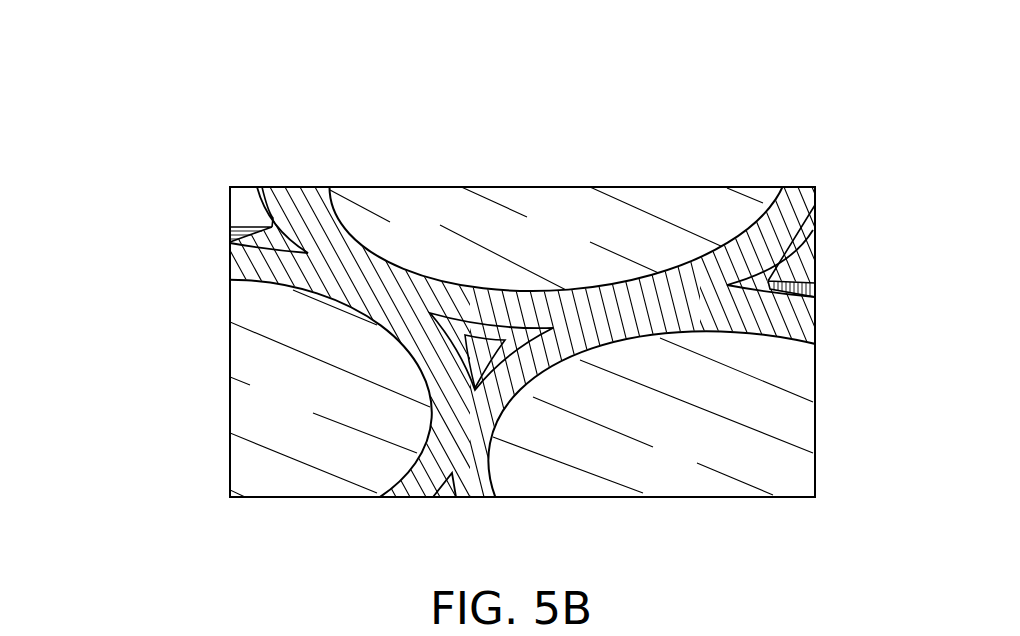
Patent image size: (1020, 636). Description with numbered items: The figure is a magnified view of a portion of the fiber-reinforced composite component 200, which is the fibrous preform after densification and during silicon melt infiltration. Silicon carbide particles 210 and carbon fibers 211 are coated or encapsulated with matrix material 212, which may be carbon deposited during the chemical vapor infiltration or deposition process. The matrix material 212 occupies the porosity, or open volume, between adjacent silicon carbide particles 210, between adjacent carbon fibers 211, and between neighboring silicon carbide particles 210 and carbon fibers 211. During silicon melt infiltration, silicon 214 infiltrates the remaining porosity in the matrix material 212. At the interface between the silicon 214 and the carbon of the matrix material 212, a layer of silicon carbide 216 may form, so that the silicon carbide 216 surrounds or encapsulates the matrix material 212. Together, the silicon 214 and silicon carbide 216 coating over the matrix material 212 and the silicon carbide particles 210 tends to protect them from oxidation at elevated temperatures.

The fiber-reinforced composite component 200 is at (143, 92).
The silicon carbide particles 210 is at (304, 405).
The carbon fibers 211 is at (581, 235).
The matrix material 212 is at (315, 227).
The silicon 214 is at (236, 209).
The silicon carbide 216 is at (263, 200).